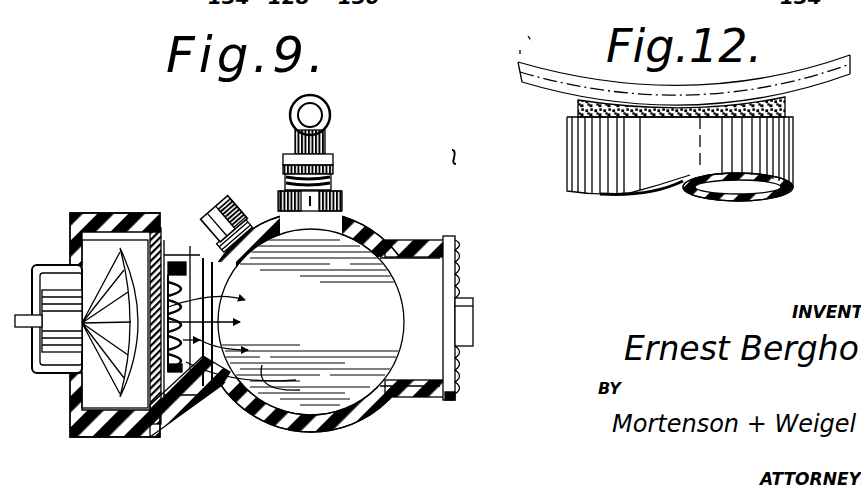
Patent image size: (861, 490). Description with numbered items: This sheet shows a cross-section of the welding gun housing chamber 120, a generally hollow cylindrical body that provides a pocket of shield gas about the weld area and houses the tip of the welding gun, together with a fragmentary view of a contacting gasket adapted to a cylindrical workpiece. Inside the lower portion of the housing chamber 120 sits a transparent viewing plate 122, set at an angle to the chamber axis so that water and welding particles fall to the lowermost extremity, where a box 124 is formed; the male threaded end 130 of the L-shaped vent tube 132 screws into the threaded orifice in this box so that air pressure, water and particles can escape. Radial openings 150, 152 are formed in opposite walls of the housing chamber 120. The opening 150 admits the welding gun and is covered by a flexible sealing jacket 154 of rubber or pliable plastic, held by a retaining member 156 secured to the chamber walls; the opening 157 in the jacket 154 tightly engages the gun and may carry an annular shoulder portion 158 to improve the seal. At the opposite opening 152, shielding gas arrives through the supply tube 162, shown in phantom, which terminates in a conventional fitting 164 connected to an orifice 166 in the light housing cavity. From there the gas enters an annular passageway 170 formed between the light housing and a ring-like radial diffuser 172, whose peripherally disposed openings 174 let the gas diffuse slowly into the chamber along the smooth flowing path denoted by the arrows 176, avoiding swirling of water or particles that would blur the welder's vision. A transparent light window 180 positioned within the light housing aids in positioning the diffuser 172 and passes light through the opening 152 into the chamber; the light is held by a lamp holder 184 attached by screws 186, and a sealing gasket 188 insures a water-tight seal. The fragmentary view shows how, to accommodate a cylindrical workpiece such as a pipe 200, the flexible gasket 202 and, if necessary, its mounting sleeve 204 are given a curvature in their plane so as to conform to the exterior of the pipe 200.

In FIG. 9, the housing chamber 120 is at (372, 421).
In FIG. 9, the transparent viewing plate 122 is at (368, 337).
In FIG. 9, the box 124 is at (342, 203).
In FIG. 9, the male threaded end 130 is at (262, 152).
In FIG. 9, the vent tube 132 is at (330, 113).
In FIG. 12, the vent tube 132 is at (850, 55).
In FIG. 9, the radial opening 150 is at (418, 240).
In FIG. 9, the radial opening 152 is at (300, 390).
In FIG. 9, the flexible sealing jacket 154 is at (462, 356).
In FIG. 9, the retaining member 156 is at (450, 400).
In FIG. 9, the opening 157 is at (473, 308).
In FIG. 9, the annular shoulder portion 158 is at (462, 296).
In FIG. 9, the shield gas supply tube 162 is at (442, 164).
In FIG. 9, the fitting 164 is at (212, 190).
In FIG. 9, the orifice 166 is at (167, 217).
In FIG. 9, the annular passageway 170 is at (175, 430).
In FIG. 9, the radial diffuser 172 is at (227, 323).
In FIG. 9, the peripherally disposed openings 174 is at (152, 330).
In FIG. 9, the arrows 176 is at (245, 375).
In FIG. 9, the transparent light window 180 is at (158, 250).
In FIG. 9, the lamp holder 184 is at (50, 265).
In FIG. 9, the screws 186 is at (72, 250).
In FIG. 9, the sealing gasket 188 is at (82, 437).
In FIG. 12, the pipe 200 is at (784, 82).
In FIG. 12, the flexible gasket 202 is at (790, 105).
In FIG. 12, the sleeve 204 is at (790, 168).